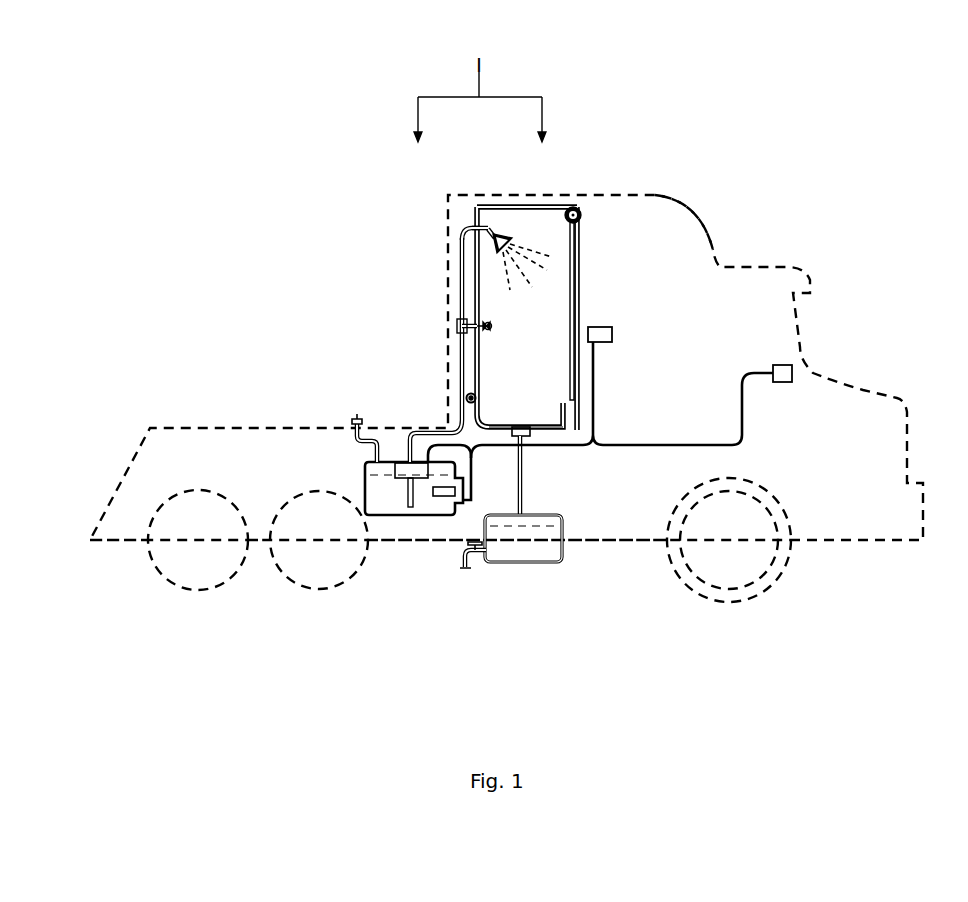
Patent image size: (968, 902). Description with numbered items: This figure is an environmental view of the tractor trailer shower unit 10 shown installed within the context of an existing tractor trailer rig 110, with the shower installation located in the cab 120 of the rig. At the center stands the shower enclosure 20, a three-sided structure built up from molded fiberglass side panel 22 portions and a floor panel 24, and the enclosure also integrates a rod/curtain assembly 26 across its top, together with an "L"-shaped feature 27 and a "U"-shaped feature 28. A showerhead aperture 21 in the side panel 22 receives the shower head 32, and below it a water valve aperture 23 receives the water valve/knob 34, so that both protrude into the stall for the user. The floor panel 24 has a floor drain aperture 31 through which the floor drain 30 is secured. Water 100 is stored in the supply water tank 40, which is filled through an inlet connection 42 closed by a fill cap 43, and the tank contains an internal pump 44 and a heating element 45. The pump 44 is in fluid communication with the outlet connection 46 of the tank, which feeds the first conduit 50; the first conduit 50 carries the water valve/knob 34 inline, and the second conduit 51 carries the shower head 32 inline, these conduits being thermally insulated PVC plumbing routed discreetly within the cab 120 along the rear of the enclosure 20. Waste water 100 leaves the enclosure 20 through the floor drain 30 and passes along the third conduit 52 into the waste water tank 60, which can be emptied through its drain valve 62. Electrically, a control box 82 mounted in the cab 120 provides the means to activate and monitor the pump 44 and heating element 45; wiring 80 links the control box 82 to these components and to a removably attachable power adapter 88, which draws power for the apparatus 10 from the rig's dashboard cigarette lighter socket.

The tractor trailer shower unit 10 is at (320, 152).
The shower enclosure 20 is at (497, 205).
The showerhead aperture 21 is at (470, 223).
The side panel 22 is at (475, 213).
The water valve aperture 23 is at (468, 322).
The floor panel 24 is at (500, 437).
The rod/curtain assembly 26 is at (578, 208).
The "L"-shaped feature 27 is at (471, 391).
The "U"-shaped feature 28 is at (467, 398).
The floor drain 30 is at (577, 340).
The floor drain aperture 31 is at (514, 426).
The shower head 32 is at (503, 236).
The water valve/knob 34 is at (491, 325).
The supply water tank 40 is at (365, 477).
The inlet connection 42 is at (353, 427).
The fill cap 43 is at (357, 418).
The pump 44 is at (402, 466).
The heating element 45 is at (445, 492).
The outlet connection 46 is at (430, 432).
The first conduit 50 is at (458, 335).
The second conduit 51 is at (458, 270).
The third conduit 52 is at (523, 496).
The waste water tank 60 is at (517, 563).
The drain valve 62 is at (465, 569).
The wiring 80 is at (442, 444).
The control box 82 is at (612, 327).
The power adapter 88 is at (792, 366).
The water 100 is at (533, 248).
The tractor trailer rig 110 is at (150, 432).
The cab 120 is at (690, 210).